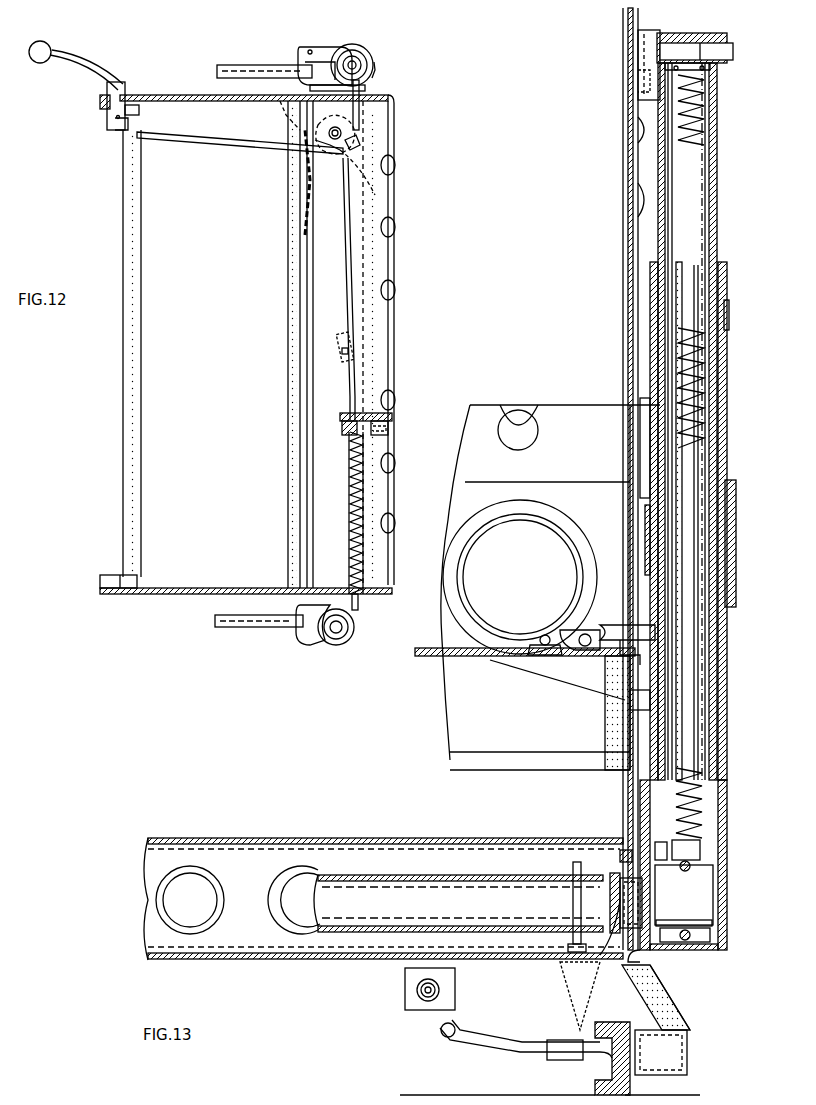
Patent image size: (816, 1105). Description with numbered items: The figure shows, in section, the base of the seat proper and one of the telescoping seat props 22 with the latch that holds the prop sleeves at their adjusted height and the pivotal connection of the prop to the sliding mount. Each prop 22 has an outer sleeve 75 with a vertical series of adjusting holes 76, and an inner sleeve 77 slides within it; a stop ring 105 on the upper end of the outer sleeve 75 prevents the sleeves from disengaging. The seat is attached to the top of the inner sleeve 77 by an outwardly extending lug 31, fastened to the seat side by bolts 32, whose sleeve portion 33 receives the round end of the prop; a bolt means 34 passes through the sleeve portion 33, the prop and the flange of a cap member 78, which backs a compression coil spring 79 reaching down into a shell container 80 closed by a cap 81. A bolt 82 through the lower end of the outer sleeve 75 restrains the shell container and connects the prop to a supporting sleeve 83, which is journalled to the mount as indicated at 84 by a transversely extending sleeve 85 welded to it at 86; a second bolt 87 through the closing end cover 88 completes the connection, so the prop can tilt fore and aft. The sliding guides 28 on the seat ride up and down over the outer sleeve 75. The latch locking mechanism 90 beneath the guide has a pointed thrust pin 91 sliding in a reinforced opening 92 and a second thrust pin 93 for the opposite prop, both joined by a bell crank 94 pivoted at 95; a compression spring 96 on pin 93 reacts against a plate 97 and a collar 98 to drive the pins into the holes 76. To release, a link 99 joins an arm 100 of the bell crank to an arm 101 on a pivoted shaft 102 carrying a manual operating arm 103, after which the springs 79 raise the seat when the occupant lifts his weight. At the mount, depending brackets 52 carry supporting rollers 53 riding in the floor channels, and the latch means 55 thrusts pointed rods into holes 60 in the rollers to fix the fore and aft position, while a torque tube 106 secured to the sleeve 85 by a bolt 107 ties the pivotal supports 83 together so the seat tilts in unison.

In FIG. 13, the telescoping seat prop 22 is at (728, 668).
In FIG. 13, the sliding guide 28 is at (738, 506).
In FIG. 13, the outwardly extending lug 31 is at (648, 32).
In FIG. 13, the bolt 32 is at (622, 40).
In FIG. 13, the sleeve portion 33 is at (670, 36).
In FIG. 13, the bolt means 34 is at (700, 50).
In FIG. 13, the depending bracket 52 is at (664, 992).
In FIG. 13, the supporting roller 53 is at (672, 1030).
In FIG. 13, the manually manipulable latch means 55 is at (470, 1040).
In FIG. 13, the hole 60 is at (595, 1073).
In FIG. 12, the outer sleeve 75 is at (364, 52).
In FIG. 13, the outer sleeve 75 is at (728, 719).
In FIG. 13, the adjusting hole 76 is at (645, 760).
In FIG. 13, the inner sleeve 77 is at (718, 196).
In FIG. 13, the cap member 78 is at (712, 72).
In FIG. 12, the compression coil spring 79 is at (375, 66).
In FIG. 13, the compression coil spring 79 is at (700, 142).
In FIG. 13, the shell container 80 is at (706, 633).
In FIG. 13, the cap 81 is at (702, 848).
In FIG. 13, the bolt 82 is at (692, 866).
In FIG. 12, the supporting sleeve 83 is at (326, 47).
In FIG. 13, the supporting sleeve 83 is at (728, 895).
In FIG. 13, the journal connection 84 is at (620, 855).
In FIG. 13, the transversely extending sleeve 85 is at (580, 862).
In FIG. 13, the weld 86 is at (645, 958).
In FIG. 13, the second bolt 87 is at (715, 934).
In FIG. 13, the closing end cover 88 is at (705, 920).
In FIG. 12, the latch locking mechanism 90 is at (273, 146).
In FIG. 13, the latch locking mechanism 90 is at (548, 642).
In FIG. 13, the thrust pin 91 is at (595, 625).
In FIG. 12, the reinforced opening 92 is at (361, 93).
In FIG. 13, the reinforced opening 92 is at (625, 625).
In FIG. 12, the second thrust pin 93 is at (352, 274).
In FIG. 12, the bell crank 94 is at (342, 133).
In FIG. 12, the pivotal connection 95 is at (358, 145).
In FIG. 12, the compression spring 96 is at (366, 497).
In FIG. 12, the plate 97 is at (390, 428).
In FIG. 12, the collar 98 is at (380, 590).
In FIG. 12, the link 99 is at (208, 148).
In FIG. 12, the arm of bell crank 100 is at (345, 160).
In FIG. 12, the arm 101 is at (124, 131).
In FIG. 12, the pivoted shaft 102 is at (107, 115).
In FIG. 12, the manual operating arm 103 is at (80, 58).
In FIG. 13, the stop ring 105 is at (730, 318).
In FIG. 13, the torque tube 106 is at (402, 875).
In FIG. 13, the bolt 107 is at (556, 870).